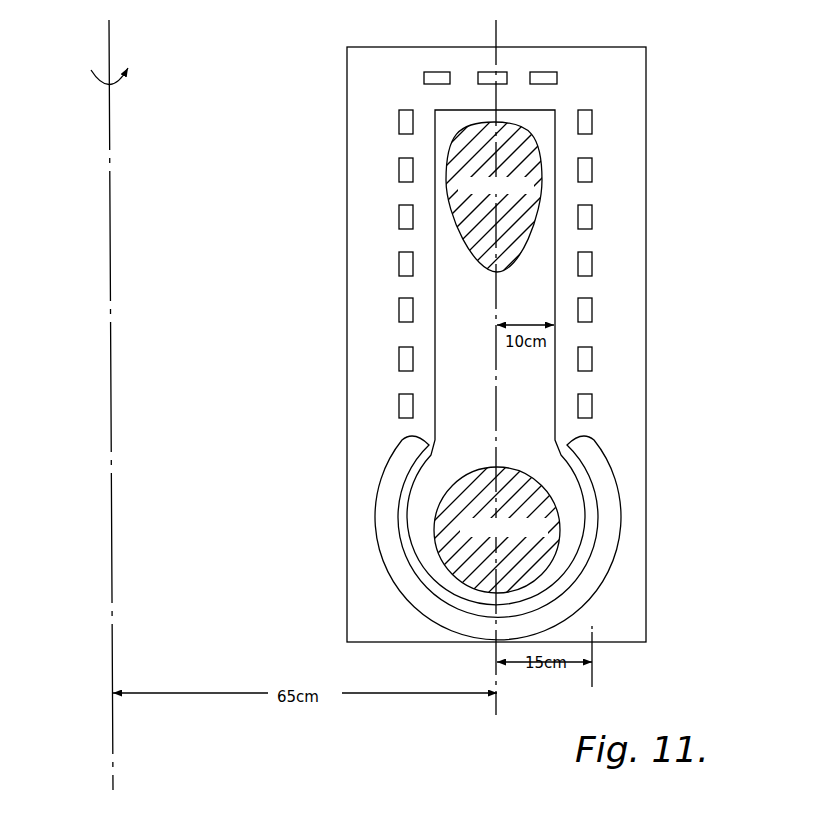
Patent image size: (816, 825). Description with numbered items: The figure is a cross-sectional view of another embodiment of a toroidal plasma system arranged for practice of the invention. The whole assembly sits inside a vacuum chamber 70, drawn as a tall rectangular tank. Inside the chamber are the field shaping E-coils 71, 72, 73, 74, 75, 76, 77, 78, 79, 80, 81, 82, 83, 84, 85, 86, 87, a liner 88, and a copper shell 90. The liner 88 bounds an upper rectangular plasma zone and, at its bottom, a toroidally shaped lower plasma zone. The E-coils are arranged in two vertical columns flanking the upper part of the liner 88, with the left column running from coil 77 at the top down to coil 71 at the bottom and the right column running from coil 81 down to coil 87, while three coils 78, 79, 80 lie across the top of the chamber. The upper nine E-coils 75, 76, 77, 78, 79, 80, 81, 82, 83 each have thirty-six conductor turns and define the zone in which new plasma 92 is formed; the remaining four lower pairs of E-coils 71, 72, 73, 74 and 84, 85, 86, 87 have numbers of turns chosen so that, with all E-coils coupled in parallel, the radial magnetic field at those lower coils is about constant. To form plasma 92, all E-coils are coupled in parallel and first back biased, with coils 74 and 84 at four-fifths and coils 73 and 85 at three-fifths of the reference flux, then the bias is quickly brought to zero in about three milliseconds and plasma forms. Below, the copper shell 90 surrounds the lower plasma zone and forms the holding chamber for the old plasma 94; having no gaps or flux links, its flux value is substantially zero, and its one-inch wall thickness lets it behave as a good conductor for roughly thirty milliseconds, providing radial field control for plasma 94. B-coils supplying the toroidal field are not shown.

The vacuum chamber 70 is at (647, 48).
The E-coil 71 is at (391, 406).
The E-coil 72 is at (391, 359).
The E-coil 73 is at (391, 310).
The E-coil 74 is at (391, 264).
The E-coil 75 is at (391, 217).
The E-coil 76 is at (313, 212).
The E-coil 77 is at (391, 122).
The E-coil 78 is at (436, 66).
The E-coil 79 is at (492, 66).
The E-coil 80 is at (543, 66).
The E-coil 81 is at (600, 122).
The E-coil 82 is at (600, 170).
The E-coil 83 is at (600, 217).
The E-coil 84 is at (600, 264).
The E-coil 85 is at (600, 310).
The E-coil 86 is at (600, 359).
The E-coil 87 is at (600, 406).
The liner 88 is at (433, 330).
The copper shell 90 is at (387, 528).
The new plasma 92 is at (522, 232).
The old plasma 94 is at (547, 545).